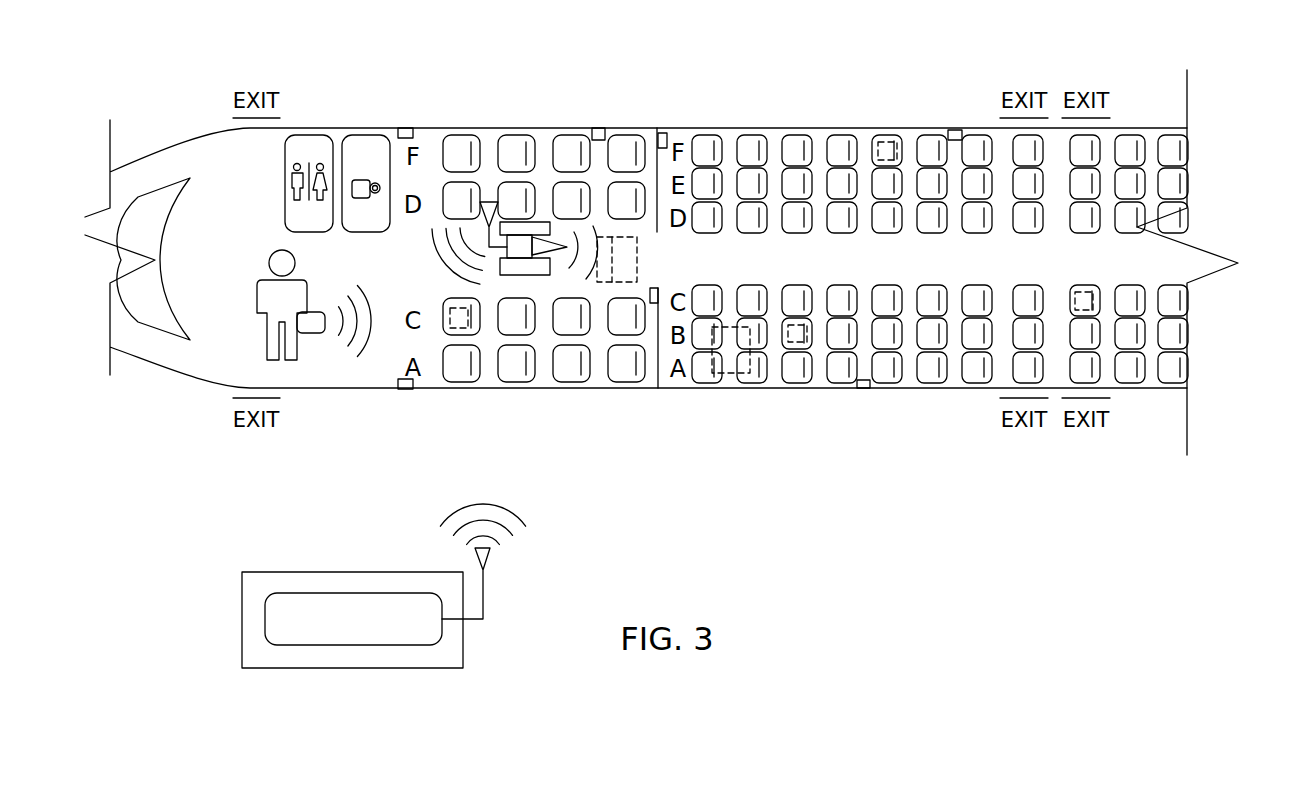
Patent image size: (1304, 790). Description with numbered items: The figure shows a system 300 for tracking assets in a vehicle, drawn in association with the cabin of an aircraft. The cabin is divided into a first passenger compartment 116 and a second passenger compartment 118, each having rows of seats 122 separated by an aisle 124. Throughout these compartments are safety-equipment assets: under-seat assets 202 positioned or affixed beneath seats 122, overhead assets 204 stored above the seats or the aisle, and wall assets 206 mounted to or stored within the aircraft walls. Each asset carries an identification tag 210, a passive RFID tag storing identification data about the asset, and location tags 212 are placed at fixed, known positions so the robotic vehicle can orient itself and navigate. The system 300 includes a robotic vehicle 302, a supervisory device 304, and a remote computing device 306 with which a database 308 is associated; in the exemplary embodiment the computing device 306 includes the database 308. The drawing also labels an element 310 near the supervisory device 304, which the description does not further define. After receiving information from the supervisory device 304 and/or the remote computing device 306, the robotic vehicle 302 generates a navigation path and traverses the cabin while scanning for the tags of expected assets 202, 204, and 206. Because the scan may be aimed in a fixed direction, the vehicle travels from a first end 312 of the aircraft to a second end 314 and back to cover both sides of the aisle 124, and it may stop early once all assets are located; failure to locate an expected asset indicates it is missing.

The first passenger compartment 116 is at (492, 393).
The second passenger compartment 118 is at (913, 393).
The seat 122 is at (466, 150).
The aisle 124 is at (1140, 270).
The under-seat asset 202 is at (463, 328).
The overhead asset 204 is at (614, 258).
The wall-mounted asset 206 is at (600, 128).
The identification tag 210 is at (600, 252).
The location tag 212 is at (405, 128).
The system for tracking assets 300 is at (273, 493).
The robotic vehicle 302 is at (537, 222).
The supervisory device 304 is at (312, 333).
The remote computing device 306 is at (407, 668).
The database 308 is at (317, 645).
The passenger 310 is at (277, 315).
The first end 312 is at (420, 247).
The second end 314 is at (1110, 257).